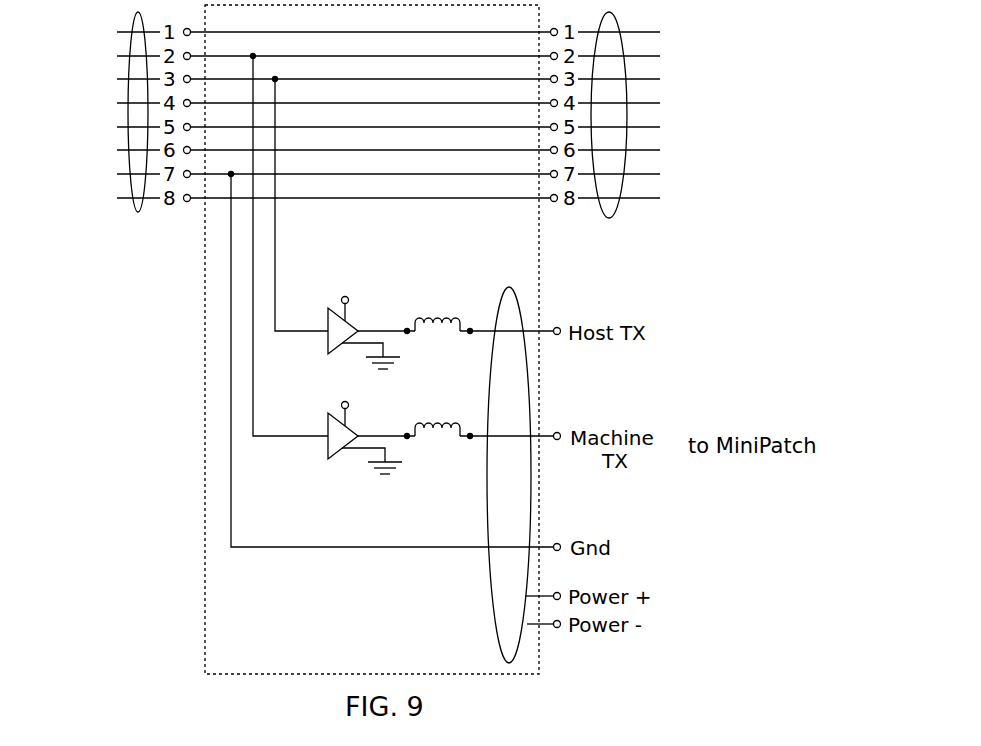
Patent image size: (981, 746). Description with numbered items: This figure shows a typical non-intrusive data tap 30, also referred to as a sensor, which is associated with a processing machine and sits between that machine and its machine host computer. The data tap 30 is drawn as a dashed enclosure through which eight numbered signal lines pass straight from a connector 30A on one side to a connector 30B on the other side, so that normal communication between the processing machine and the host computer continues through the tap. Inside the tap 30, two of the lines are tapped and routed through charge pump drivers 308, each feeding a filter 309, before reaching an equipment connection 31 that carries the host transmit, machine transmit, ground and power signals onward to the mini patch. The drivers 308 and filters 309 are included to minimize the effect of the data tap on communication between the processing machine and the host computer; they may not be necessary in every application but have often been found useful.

The non-intrusive data tap 30 is at (164, 556).
The first connector 30A is at (138, 14).
The second connector 30B is at (609, 218).
The equipment connection 31 is at (509, 287).
The charge pump driver 308 is at (328, 322).
The filter 309 is at (443, 319).